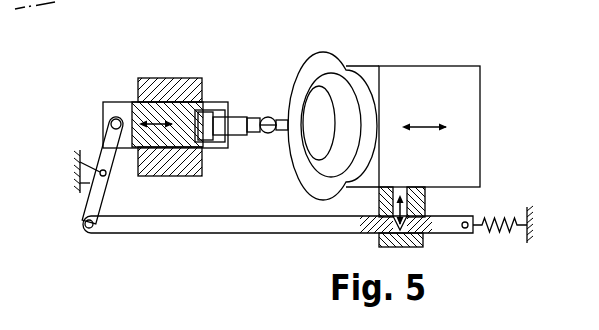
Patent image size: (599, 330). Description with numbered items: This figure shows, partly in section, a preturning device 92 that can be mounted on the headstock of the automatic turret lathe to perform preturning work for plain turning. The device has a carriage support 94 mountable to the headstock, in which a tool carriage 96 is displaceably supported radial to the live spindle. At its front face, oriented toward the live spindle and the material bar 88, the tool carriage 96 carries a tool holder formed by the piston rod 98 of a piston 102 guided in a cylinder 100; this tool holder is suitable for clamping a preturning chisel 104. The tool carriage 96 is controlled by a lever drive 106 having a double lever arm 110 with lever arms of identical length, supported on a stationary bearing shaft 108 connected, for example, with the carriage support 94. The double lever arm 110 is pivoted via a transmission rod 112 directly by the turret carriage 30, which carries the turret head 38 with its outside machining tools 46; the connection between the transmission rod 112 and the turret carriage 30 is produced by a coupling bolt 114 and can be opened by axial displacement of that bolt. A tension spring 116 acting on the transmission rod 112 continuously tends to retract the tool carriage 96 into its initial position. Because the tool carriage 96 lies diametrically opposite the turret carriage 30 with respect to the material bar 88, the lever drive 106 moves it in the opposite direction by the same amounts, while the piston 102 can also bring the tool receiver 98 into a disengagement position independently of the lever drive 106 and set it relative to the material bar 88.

The turret carriage 30 is at (440, 75).
The turret head 38 is at (318, 48).
The outside machining tools 46 is at (283, 131).
The material bar 88 is at (263, 133).
The preturning device 92 is at (101, 99).
The carriage support 94 is at (162, 80).
The tool carriage 96 is at (178, 137).
The piston rod 98 is at (238, 134).
The cylinder 100 is at (208, 112).
The piston 102 is at (216, 115).
The preturning chisel 104 is at (253, 118).
The lever drive 106 is at (165, 236).
The stationary bearing shaft 108 is at (106, 176).
The double lever arm 110 is at (93, 198).
The transmission rod 112 is at (238, 227).
The coupling bolt 114 is at (425, 198).
The tension spring 116 is at (500, 232).